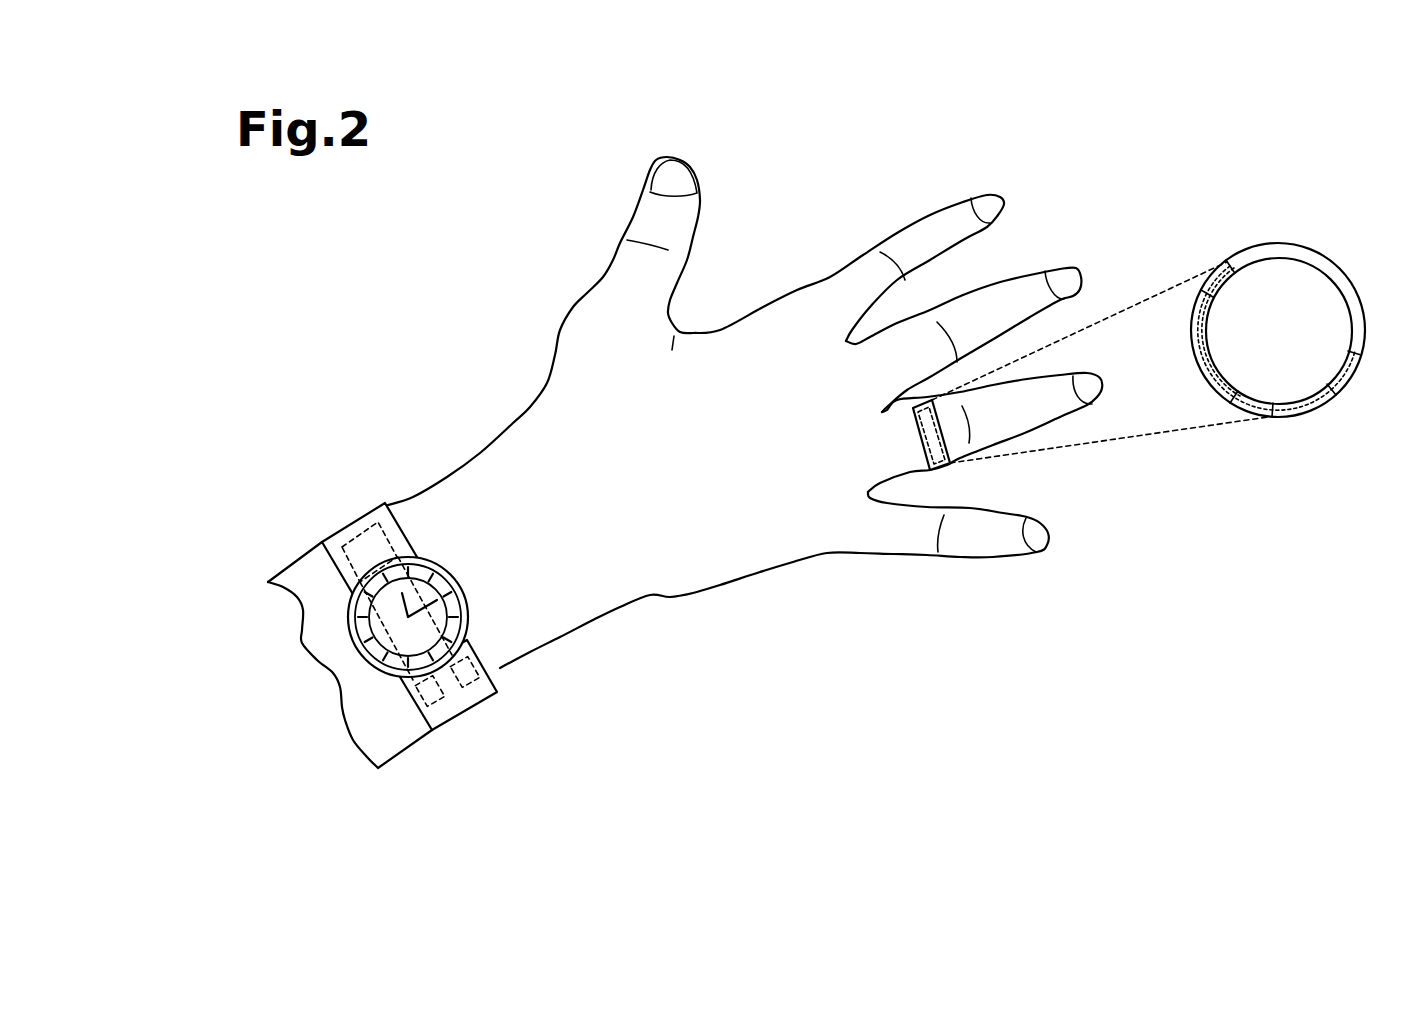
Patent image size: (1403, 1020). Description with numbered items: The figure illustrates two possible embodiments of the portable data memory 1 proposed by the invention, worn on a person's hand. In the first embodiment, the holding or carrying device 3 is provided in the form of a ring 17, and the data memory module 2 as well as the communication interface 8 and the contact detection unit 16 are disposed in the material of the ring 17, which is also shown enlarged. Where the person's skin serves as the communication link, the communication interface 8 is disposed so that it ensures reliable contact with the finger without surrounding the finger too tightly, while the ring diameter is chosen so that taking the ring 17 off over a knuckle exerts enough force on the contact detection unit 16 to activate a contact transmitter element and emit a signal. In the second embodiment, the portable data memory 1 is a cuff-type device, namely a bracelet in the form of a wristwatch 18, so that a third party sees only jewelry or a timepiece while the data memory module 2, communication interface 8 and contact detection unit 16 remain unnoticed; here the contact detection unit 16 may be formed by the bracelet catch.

The portable data memory 1 is at (488, 707).
The data memory module 2 is at (360, 542).
The holding or carrying device 3 is at (1331, 273).
The communication interface 8 is at (480, 672).
The contact detection unit 16 is at (427, 707).
The ring 17 is at (940, 470).
The wristwatch 18 is at (328, 570).